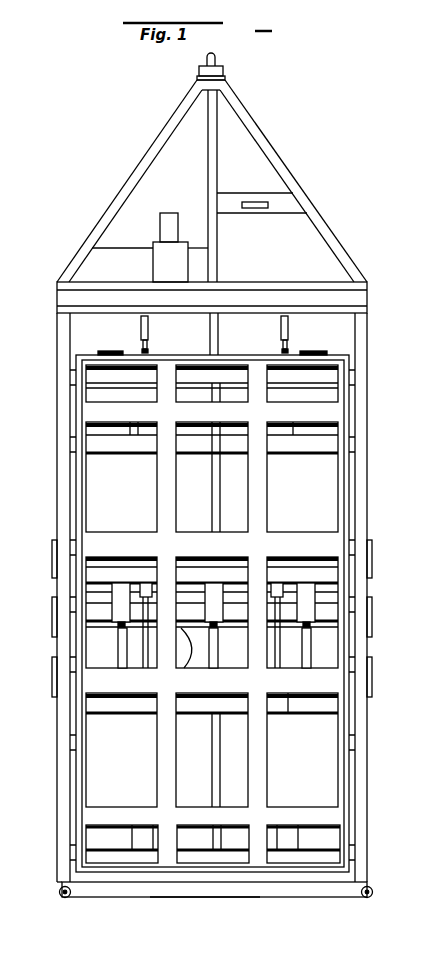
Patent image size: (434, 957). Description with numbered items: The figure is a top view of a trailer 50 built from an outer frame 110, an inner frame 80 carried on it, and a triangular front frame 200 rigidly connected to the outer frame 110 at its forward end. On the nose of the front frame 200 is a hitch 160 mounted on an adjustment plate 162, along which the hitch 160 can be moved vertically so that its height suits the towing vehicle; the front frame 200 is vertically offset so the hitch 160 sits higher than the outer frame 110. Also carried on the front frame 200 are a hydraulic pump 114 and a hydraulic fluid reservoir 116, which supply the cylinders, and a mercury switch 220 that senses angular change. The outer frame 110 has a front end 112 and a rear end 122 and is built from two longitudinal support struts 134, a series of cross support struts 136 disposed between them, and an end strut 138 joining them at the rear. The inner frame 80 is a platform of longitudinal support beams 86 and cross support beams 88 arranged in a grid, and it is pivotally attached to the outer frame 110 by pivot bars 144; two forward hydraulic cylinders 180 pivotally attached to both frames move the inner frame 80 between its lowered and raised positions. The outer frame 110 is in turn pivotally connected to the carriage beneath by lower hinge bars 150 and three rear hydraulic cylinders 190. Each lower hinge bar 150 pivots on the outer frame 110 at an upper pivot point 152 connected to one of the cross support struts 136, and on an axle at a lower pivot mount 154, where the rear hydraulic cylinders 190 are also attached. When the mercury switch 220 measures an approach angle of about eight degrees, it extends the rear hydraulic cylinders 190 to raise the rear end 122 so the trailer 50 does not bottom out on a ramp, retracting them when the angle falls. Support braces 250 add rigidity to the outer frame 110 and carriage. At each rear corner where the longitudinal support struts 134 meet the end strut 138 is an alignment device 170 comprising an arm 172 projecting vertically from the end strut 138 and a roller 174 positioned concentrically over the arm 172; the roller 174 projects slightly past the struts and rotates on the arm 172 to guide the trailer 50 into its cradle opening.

The trailer 50 is at (118, 188).
The front frame 200 is at (305, 190).
The hitch 160 is at (217, 57).
The adjustment plate 162 is at (223, 78).
The hydraulic pump 114 is at (180, 214).
The hydraulic fluid reservoir 116 is at (151, 262).
The mercury switch 220 is at (250, 209).
The front end 112 is at (58, 338).
The outer frame 110 is at (58, 403).
The longitudinal support struts 134 is at (357, 394).
The inner frame 80 is at (72, 516).
The cross support struts 136 is at (100, 384).
The pivot bars 144 is at (138, 436).
The longitudinal support beams 86 is at (155, 485).
The cross support beams 88 is at (142, 532).
The lower hinge bars 150 is at (127, 592).
The upper pivot point 152 is at (233, 590).
The lower pivot mount 154 is at (190, 668).
The rear hydraulic cylinders 190 is at (118, 657).
The support braces 250 is at (219, 756).
The forward hydraulic cylinders 180 is at (147, 331).
The alignment device 170 is at (69, 896).
The arm 172 is at (362, 899).
The roller 174 is at (373, 892).
The rear end 122 is at (167, 897).
The end strut 138 is at (203, 897).